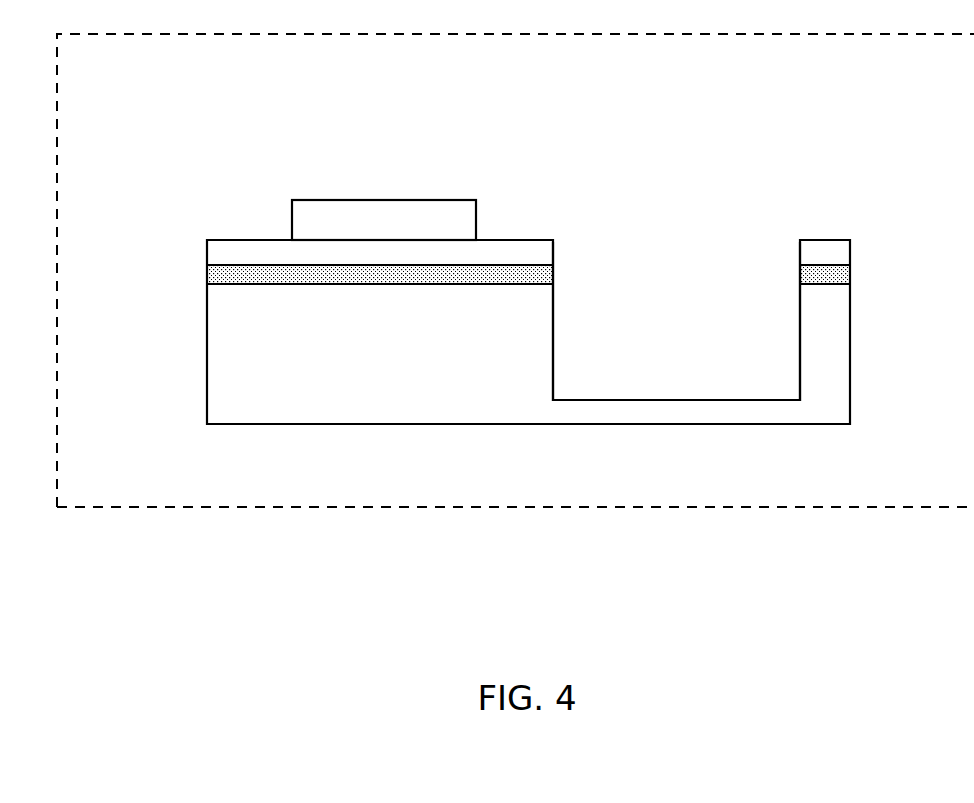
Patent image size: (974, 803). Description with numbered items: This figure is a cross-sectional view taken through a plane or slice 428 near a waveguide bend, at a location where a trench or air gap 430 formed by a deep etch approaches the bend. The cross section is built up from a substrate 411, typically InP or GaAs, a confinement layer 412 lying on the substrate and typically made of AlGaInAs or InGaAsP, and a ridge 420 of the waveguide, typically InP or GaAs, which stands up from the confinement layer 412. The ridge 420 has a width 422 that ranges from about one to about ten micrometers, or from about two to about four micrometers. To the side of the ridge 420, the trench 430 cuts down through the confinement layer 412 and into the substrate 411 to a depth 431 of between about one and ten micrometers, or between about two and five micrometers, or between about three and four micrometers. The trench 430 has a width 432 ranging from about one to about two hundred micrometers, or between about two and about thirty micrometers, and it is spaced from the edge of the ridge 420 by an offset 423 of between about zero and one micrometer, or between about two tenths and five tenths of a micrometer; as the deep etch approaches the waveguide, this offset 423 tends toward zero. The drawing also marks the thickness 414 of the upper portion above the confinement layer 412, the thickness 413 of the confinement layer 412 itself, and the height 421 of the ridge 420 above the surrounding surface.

The slice 428 is at (80, 71).
The substrate 411 is at (207, 348).
The confinement layer 412 is at (207, 272).
The thickness of layer 412 413 is at (895, 242).
The thickness of top layer 414 is at (930, 288).
The ridge of waveguide 420 is at (291, 218).
The height of block 420 421 is at (186, 240).
The width 422 is at (476, 183).
The offset 423 is at (553, 183).
The trench 430 is at (708, 272).
The depth 431 is at (553, 240).
The width 432 is at (800, 183).